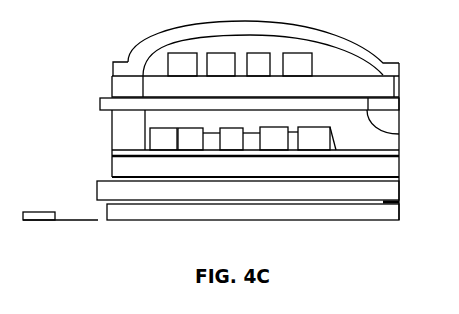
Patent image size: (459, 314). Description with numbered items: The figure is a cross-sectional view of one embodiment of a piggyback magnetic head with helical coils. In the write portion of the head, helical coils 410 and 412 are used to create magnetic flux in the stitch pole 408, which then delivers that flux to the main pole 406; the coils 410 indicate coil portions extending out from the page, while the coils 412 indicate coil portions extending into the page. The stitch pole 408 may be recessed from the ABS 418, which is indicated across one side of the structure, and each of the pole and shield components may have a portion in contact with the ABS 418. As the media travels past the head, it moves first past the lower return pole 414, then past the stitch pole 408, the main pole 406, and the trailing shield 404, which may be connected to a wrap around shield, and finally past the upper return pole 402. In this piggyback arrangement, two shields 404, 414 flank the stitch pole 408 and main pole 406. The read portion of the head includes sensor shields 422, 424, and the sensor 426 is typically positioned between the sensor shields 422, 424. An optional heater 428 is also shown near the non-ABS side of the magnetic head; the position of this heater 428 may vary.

The upper return pole 402 is at (358, 42).
The trailing shield 404 is at (401, 88).
The main pole 406 is at (401, 102).
The stitch pole 408 is at (399, 134).
The helical coils 410 is at (168, 63).
The helical coils 412 is at (176, 126).
The lower return pole 414 is at (282, 174).
The ABS 418 is at (406, 157).
The sensor shield 422 is at (97, 187).
The sensor shield 424 is at (107, 214).
The sensor 426 is at (400, 202).
The heater 428 is at (46, 212).